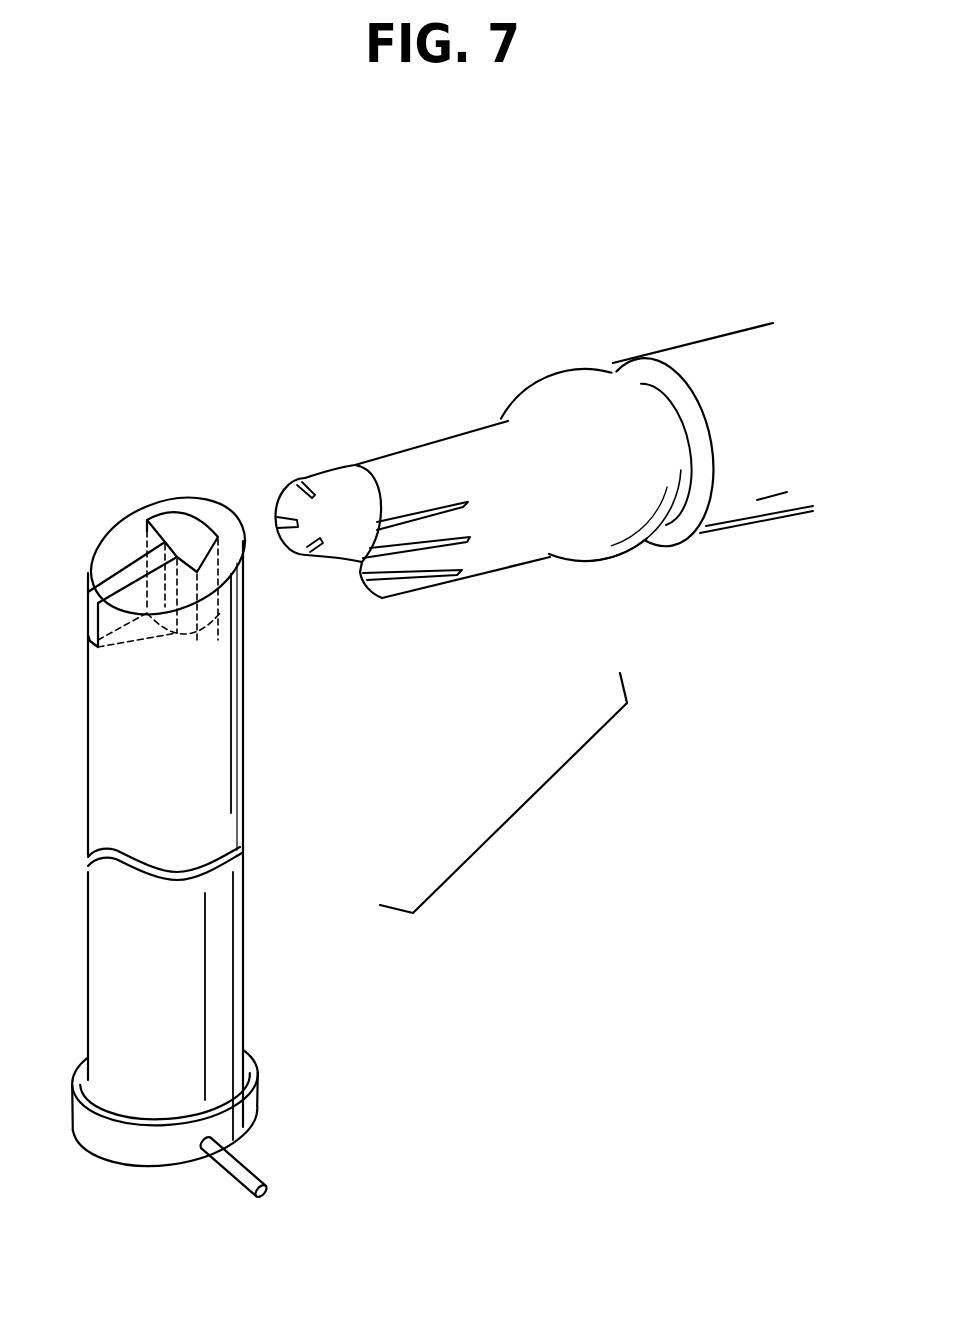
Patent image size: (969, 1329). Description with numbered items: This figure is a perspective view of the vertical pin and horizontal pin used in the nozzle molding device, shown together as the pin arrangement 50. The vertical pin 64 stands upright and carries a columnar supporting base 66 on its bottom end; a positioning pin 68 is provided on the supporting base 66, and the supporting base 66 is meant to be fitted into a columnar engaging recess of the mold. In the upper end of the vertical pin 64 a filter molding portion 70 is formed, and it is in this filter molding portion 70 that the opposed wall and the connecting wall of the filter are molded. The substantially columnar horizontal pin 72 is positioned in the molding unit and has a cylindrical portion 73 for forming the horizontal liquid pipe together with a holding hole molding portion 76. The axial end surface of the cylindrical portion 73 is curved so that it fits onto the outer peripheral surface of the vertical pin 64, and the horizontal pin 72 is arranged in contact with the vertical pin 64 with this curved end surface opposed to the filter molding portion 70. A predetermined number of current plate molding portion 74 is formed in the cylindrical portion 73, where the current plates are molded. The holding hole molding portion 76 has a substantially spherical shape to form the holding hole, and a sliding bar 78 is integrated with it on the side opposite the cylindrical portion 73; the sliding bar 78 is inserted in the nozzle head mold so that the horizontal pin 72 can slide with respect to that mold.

The connector assembly 50 is at (242, 310).
The vertical pin 64 is at (255, 813).
The supporting base 66 is at (257, 1103).
The positioning pin 68 is at (252, 1170).
The filter molding portion 70 is at (177, 535).
The horizontal pin 72 is at (503, 577).
The cylindrical portion 73 is at (437, 453).
The current plate molding portion 74 is at (288, 482).
The holding hole molding portion 76 is at (553, 377).
The sliding bar 78 is at (707, 340).